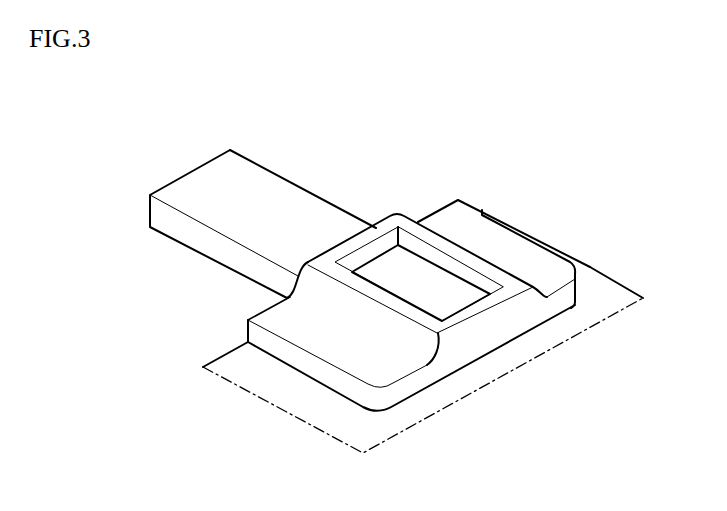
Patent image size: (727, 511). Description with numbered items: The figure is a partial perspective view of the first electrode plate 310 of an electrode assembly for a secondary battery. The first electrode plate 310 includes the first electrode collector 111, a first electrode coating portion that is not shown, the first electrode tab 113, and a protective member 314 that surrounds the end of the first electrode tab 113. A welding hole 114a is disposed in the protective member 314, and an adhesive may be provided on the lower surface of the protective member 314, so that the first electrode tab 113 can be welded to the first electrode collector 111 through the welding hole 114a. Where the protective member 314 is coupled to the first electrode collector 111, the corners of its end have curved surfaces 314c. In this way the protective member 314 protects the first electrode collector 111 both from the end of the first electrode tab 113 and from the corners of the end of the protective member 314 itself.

The first electrode plate 310 is at (408, 299).
The protective member 314 is at (396, 343).
The curved surfaces 314c is at (378, 410).
The welding hole 114a is at (415, 241).
The first electrode tab 113 is at (292, 197).
The first electrode collector 111 is at (225, 358).